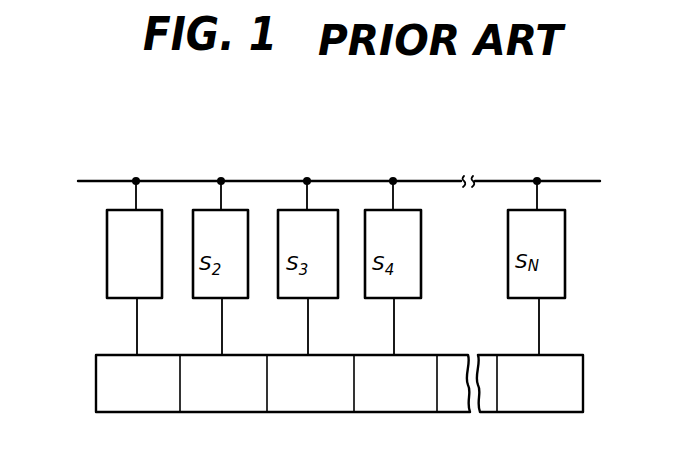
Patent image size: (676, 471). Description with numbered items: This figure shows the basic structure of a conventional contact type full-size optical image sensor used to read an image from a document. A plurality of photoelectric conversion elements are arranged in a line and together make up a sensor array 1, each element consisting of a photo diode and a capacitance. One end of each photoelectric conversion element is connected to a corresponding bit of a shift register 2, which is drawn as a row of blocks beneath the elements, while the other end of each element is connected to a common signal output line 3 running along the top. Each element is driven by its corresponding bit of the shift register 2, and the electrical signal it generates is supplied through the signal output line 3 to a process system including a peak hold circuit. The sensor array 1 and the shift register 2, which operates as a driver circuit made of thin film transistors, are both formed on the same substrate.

The sensor array 1 is at (93, 255).
The shift register 2 is at (96, 385).
The signal output line 3 is at (500, 181).